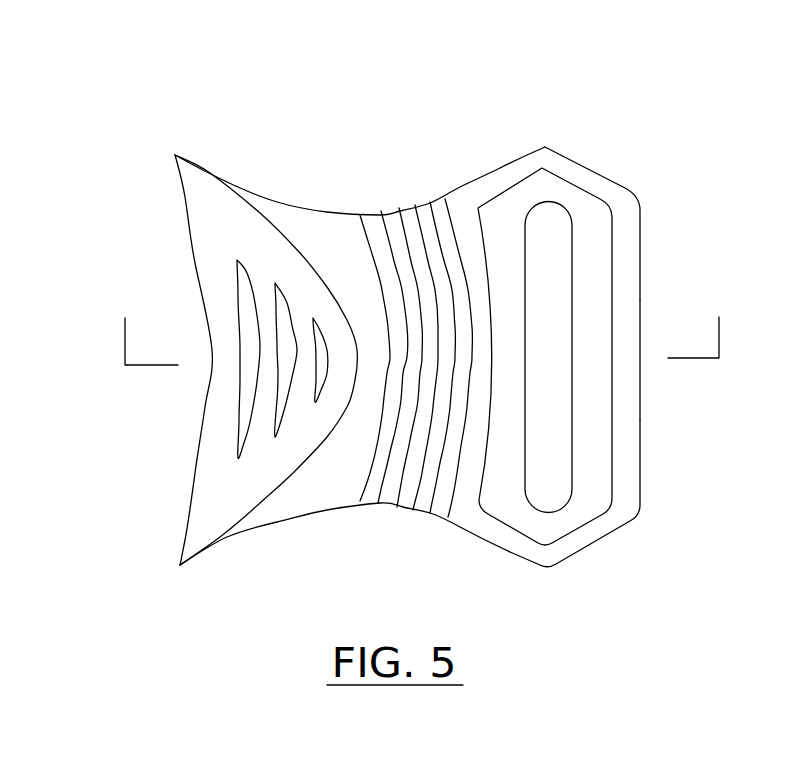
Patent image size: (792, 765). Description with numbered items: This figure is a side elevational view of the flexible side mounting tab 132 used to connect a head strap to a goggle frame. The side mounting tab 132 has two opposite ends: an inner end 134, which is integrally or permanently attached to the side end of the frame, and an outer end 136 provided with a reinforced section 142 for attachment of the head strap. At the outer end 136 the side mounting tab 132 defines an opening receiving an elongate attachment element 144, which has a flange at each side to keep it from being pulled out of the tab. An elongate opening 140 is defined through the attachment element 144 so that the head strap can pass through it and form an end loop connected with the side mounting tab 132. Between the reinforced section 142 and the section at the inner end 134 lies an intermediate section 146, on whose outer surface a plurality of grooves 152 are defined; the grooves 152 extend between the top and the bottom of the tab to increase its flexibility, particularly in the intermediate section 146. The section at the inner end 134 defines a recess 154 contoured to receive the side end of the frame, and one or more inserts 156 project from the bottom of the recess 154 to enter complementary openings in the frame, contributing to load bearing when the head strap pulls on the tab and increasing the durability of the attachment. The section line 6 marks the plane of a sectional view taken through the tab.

The side mounting tab 132 is at (478, 176).
The inner end 134 is at (182, 157).
The outer end 136 is at (640, 208).
The elongate opening 140 is at (550, 238).
The reinforced section 142 is at (528, 153).
The elongate attachment element 144 is at (593, 262).
The intermediate section 146 is at (417, 203).
The grooves 152 is at (375, 235).
The recess 154 is at (225, 237).
The inserts 156 is at (252, 393).
The section line 6- 6 is at (417, 318).